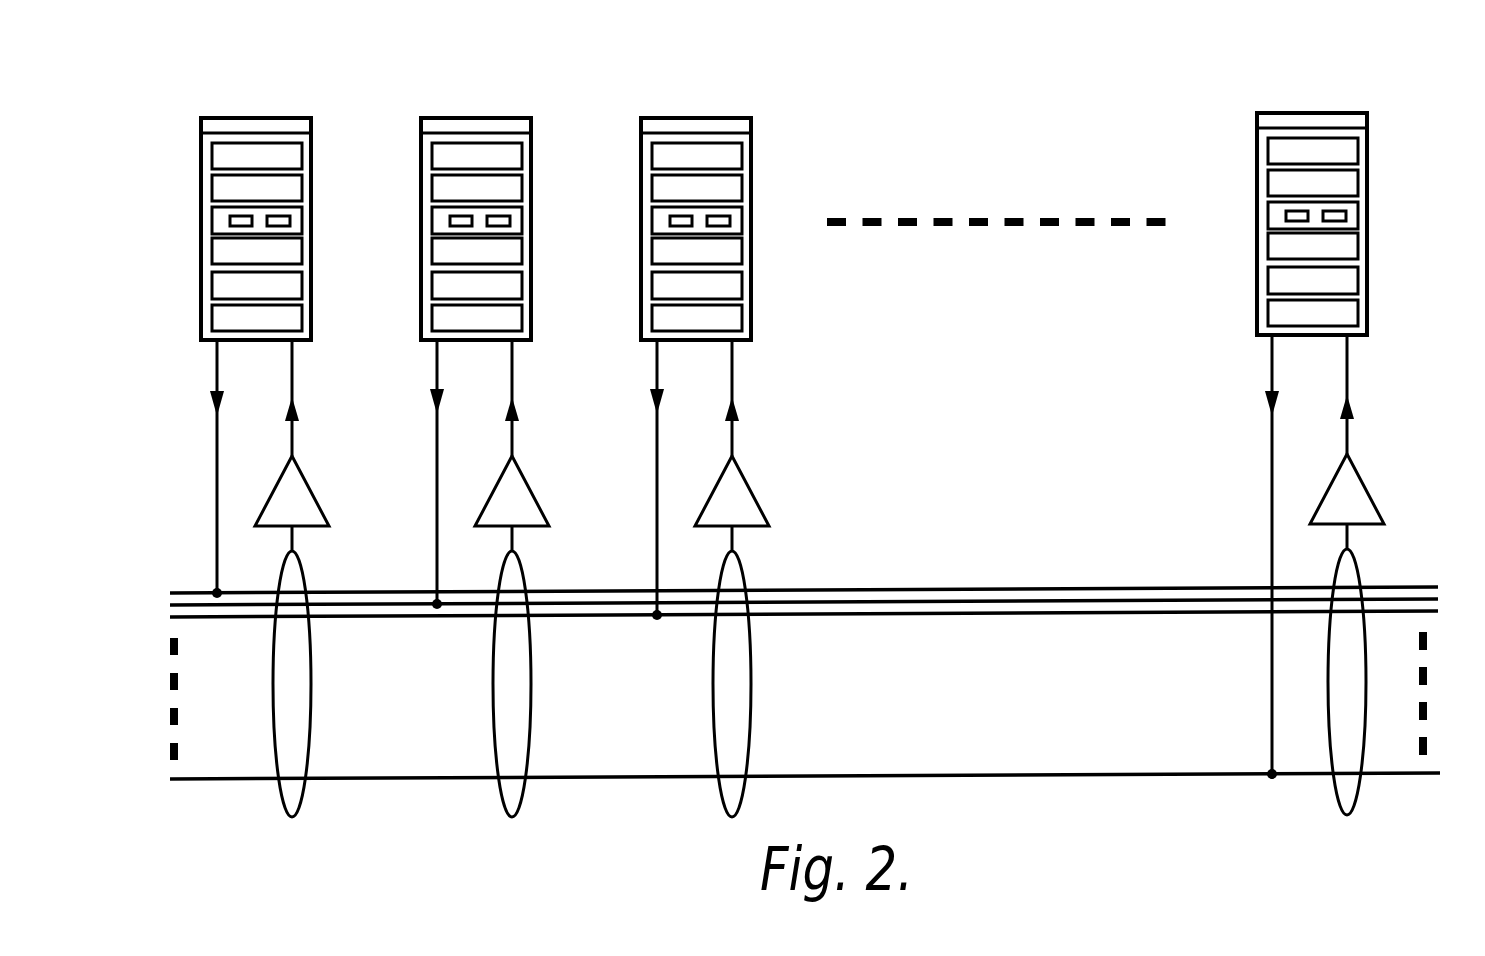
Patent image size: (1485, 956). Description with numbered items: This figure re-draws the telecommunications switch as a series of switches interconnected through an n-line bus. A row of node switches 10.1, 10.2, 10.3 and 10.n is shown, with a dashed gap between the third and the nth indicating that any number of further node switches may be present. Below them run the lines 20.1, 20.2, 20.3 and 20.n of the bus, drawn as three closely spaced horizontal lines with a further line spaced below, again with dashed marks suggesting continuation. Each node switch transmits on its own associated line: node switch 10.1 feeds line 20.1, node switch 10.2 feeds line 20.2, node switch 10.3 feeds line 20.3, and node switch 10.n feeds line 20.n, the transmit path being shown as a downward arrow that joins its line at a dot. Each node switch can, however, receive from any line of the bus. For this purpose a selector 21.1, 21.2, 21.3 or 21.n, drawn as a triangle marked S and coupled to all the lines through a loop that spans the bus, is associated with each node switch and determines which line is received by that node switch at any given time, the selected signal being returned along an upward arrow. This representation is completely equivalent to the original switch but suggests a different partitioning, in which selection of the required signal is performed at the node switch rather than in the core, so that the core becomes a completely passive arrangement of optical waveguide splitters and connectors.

The node switch 10.1 is at (250, 157).
The node switch 10.2 is at (485, 155).
The node switch 10.3 is at (680, 158).
The node switch 10.n is at (1295, 145).
The selector 21.1 is at (295, 482).
The selector 21.2 is at (515, 477).
The selector 21.3 is at (735, 483).
The selector 21.n is at (1352, 480).
The line 20.1 is at (803, 588).
The line 20.2 is at (908, 600).
The line 20.3 is at (1013, 613).
The line 20.n is at (1055, 772).